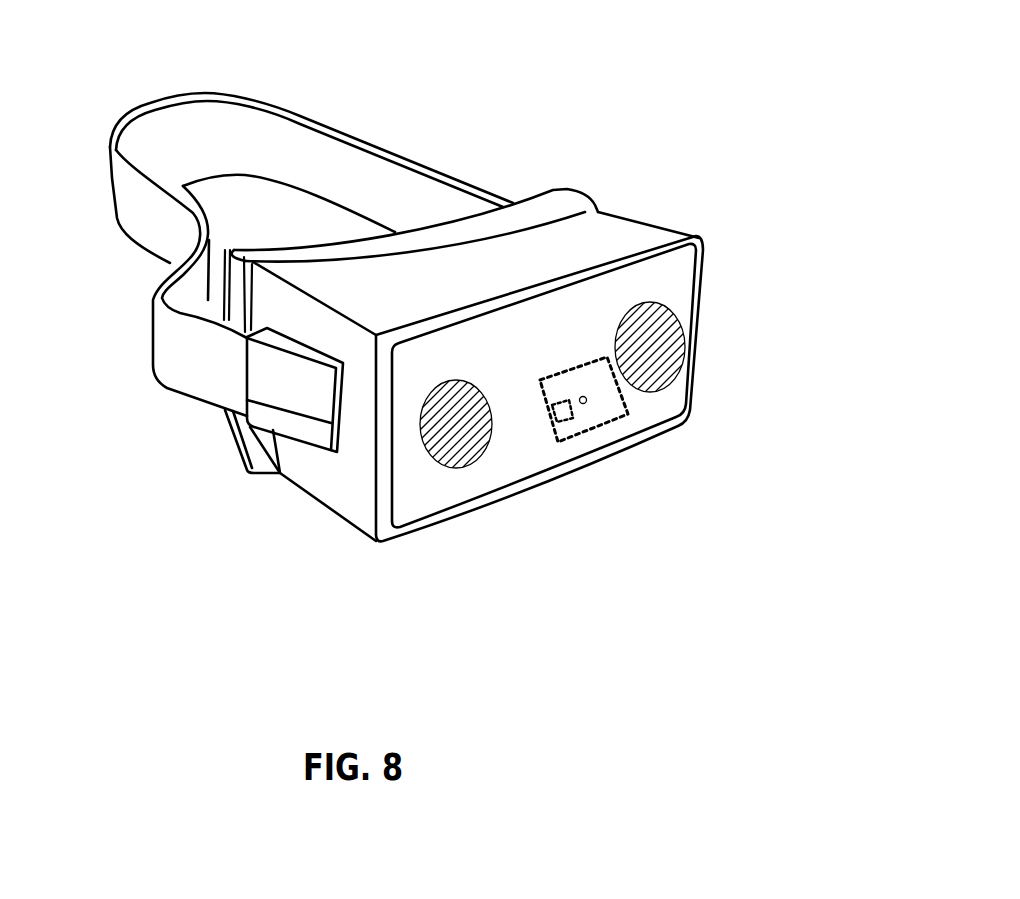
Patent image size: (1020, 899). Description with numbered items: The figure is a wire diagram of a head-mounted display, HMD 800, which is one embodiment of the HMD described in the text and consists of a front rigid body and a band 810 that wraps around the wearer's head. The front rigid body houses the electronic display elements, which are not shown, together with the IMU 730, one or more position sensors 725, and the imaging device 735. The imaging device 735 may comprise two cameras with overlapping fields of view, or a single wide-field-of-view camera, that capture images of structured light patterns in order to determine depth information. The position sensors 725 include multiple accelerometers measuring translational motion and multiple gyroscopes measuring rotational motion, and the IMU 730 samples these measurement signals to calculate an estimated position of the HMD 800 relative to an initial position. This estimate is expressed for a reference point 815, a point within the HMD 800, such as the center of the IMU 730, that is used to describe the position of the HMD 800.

The HMD 800 is at (76, 31).
The band 810 is at (413, 157).
The imaging device 735 is at (674, 353).
The IMU 730 is at (636, 417).
The position sensors 725 is at (564, 412).
The reference point 815 is at (586, 407).